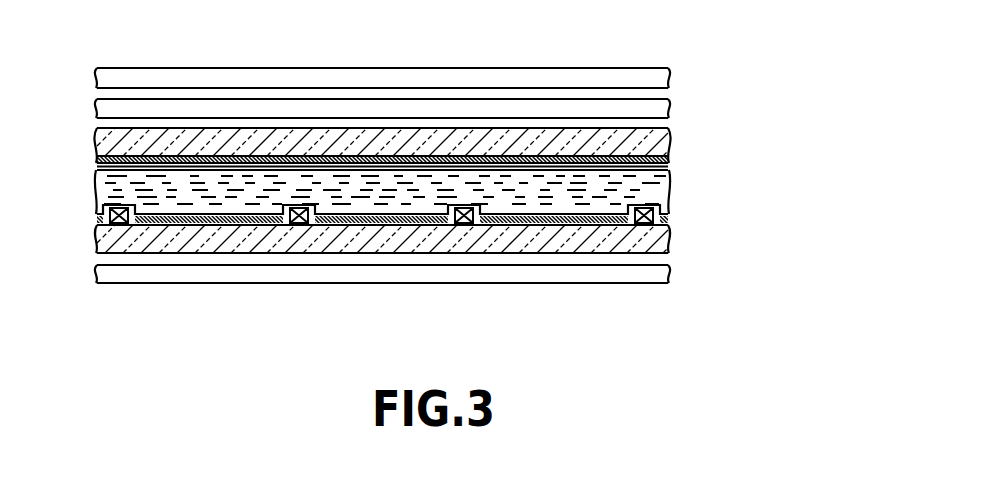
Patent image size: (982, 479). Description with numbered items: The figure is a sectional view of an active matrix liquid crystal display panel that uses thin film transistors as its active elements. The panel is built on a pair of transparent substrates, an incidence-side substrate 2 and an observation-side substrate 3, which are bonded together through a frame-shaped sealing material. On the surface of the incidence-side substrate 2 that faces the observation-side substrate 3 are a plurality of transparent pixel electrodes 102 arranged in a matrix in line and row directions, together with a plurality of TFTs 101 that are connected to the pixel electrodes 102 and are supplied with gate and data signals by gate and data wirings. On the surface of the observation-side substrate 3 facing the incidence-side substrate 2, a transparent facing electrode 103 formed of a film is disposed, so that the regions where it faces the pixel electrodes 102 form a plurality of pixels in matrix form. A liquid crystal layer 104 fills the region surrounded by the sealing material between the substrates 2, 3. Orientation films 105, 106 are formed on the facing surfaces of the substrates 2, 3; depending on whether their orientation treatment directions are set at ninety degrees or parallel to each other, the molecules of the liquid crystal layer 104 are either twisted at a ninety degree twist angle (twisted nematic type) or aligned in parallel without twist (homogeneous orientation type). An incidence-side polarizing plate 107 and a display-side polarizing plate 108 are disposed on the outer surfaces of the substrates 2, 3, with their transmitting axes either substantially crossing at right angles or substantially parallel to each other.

The incidence-side substrate 2 is at (655, 243).
The observation-side substrate 3 is at (649, 147).
The TFT 101 is at (640, 313).
The pixel electrode 102 is at (531, 313).
The facing electrode 103 is at (664, 163).
The liquid crystal layer 104 is at (655, 183).
The orientation film 105 is at (231, 214).
The orientation film 106 is at (354, 175).
The incidence-side polarizing plate 107 is at (655, 279).
The display-side polarizing plate 108 is at (661, 82).